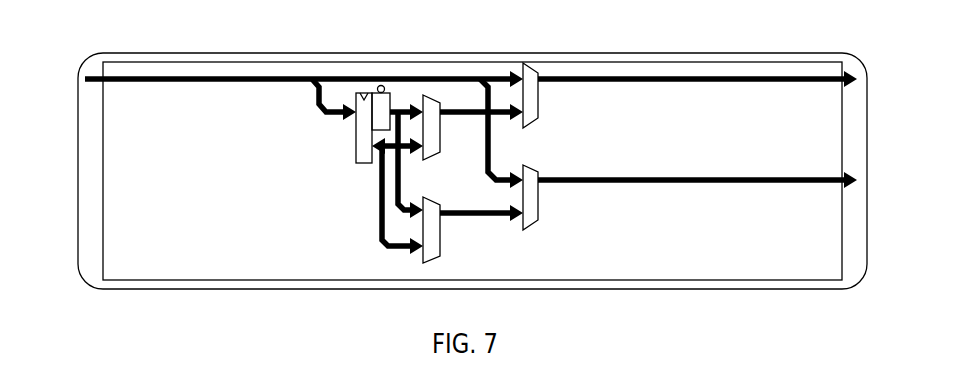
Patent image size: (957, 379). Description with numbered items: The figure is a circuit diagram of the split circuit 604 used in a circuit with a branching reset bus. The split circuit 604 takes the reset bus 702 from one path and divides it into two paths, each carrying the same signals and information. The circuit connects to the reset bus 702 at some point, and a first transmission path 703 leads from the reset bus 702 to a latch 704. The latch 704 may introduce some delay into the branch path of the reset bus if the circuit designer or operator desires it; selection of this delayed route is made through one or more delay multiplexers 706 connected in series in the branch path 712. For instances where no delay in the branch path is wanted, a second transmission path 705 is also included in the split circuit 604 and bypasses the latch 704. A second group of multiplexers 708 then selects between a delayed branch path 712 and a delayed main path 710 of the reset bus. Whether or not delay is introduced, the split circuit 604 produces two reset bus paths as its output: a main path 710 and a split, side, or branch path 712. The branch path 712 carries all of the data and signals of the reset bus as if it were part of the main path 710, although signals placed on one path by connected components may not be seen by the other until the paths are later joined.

The split circuit 604 is at (249, 31).
The reset bus 702 is at (63, 79).
The first transmission path 703 is at (322, 100).
The latch 704 is at (368, 97).
The second transmission path 705 is at (488, 158).
The delay multiplexers 706 is at (426, 152).
The second group of multiplexers 708 is at (532, 110).
The main path 710 is at (785, 79).
The branch path 712 is at (763, 180).